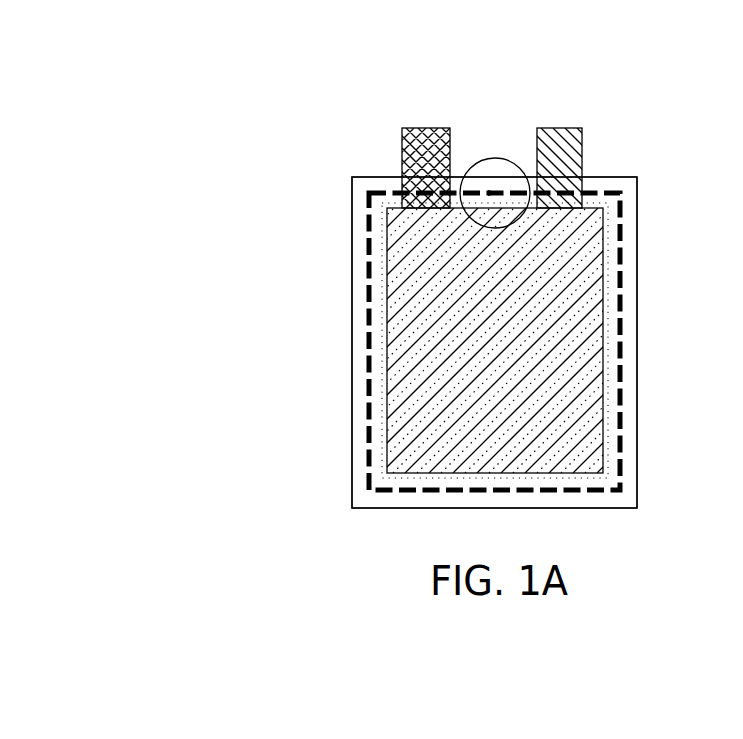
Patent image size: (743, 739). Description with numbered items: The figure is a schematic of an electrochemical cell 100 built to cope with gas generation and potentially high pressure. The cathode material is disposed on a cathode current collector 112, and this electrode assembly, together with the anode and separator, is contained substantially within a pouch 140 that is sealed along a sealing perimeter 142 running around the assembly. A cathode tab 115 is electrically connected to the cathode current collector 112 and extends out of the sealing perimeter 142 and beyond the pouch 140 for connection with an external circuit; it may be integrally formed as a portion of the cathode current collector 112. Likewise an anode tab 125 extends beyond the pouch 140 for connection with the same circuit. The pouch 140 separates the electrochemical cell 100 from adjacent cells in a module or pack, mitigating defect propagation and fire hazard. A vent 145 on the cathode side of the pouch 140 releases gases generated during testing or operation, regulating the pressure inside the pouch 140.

The electrochemical cell 100 is at (296, 149).
The cathode current collector 112 is at (388, 282).
The cathode tab 115 is at (403, 147).
The anode tab 125 is at (583, 153).
The pouch 140 is at (352, 473).
The sealing perimeter 142 is at (352, 410).
The vent 145 is at (483, 162).